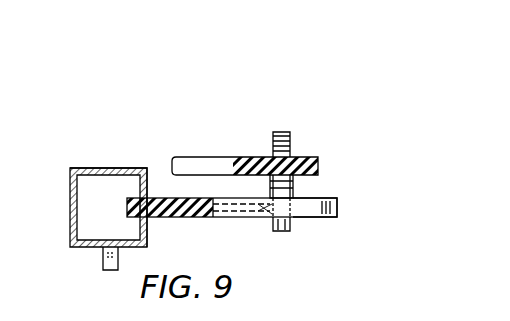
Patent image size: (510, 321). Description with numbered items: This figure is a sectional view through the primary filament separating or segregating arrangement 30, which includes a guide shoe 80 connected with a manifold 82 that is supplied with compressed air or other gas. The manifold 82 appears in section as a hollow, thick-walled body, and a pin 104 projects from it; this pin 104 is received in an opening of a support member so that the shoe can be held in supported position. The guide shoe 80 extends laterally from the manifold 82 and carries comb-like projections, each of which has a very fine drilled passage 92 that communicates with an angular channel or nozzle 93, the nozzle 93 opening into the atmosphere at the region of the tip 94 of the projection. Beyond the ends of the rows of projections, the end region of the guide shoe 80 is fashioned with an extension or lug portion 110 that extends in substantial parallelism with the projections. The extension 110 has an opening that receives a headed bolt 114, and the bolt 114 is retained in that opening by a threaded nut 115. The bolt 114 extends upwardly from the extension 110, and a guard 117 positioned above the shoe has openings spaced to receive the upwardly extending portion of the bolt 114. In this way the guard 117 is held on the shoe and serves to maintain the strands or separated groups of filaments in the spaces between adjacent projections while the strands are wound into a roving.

The primary filament separating arrangement 30 is at (130, 160).
The manifold 82 is at (70, 222).
The pin 104 is at (103, 262).
The guide shoe 80 is at (170, 222).
The drilled passage 92 is at (236, 219).
The angular channel 93 is at (260, 219).
The tip 94 is at (300, 219).
The extension 110 is at (340, 208).
The headed bolt 114 is at (297, 108).
The threaded nut 115 is at (294, 186).
The guard 117 is at (312, 158).